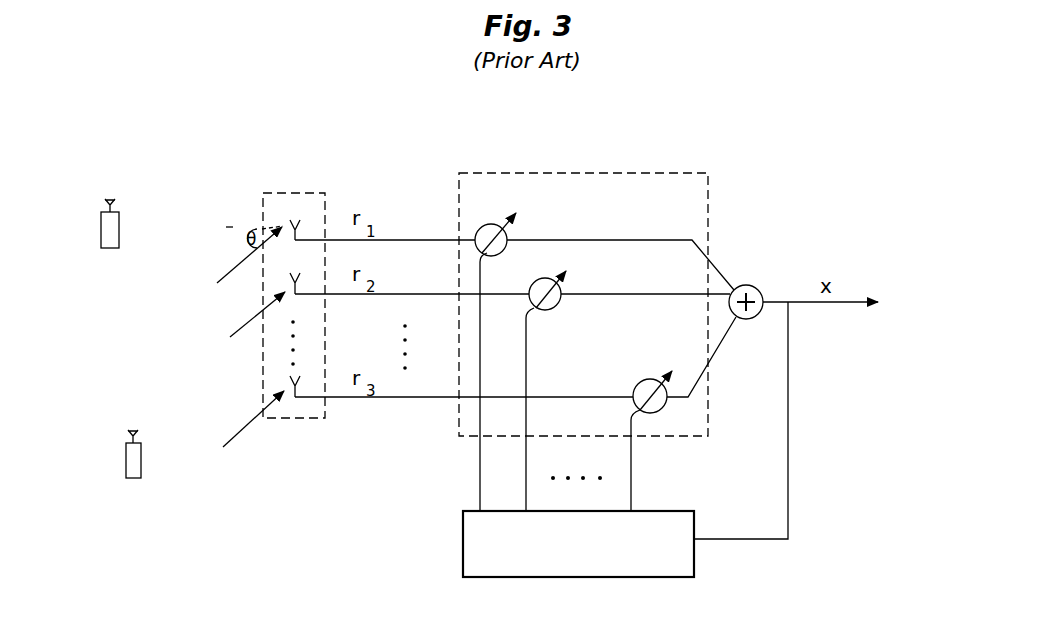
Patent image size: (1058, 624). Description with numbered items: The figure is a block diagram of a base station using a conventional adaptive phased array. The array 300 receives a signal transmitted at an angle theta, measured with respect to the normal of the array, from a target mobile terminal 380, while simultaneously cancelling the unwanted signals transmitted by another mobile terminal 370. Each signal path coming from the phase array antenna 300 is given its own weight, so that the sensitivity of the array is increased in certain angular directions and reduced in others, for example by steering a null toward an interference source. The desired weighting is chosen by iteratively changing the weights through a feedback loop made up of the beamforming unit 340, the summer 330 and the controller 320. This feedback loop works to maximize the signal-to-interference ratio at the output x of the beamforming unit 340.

The array 300 is at (303, 193).
The controller 320 is at (462, 536).
The summer 330 is at (749, 284).
The beamforming unit 340 is at (662, 173).
The mobile terminal 370 is at (126, 227).
The target mobile terminal 380 is at (133, 488).